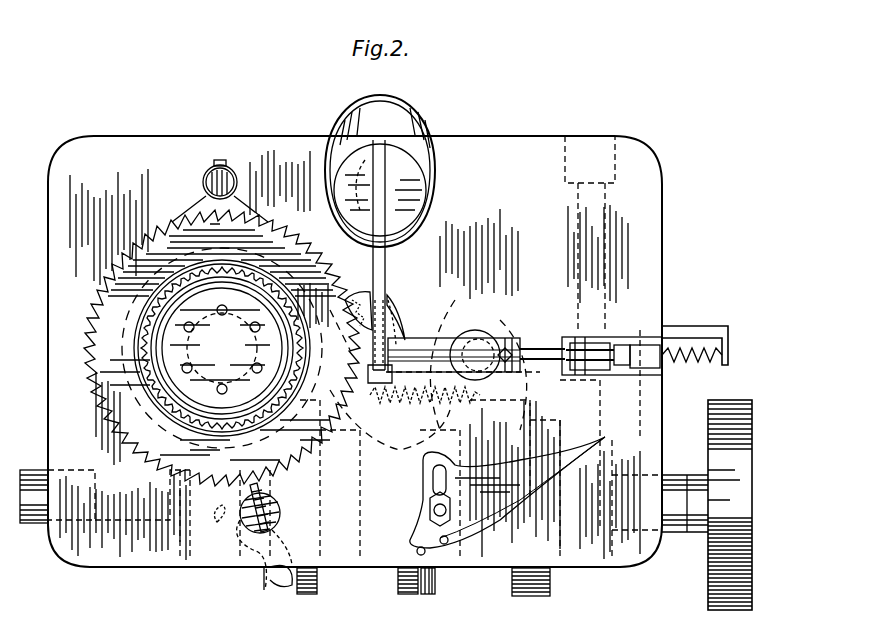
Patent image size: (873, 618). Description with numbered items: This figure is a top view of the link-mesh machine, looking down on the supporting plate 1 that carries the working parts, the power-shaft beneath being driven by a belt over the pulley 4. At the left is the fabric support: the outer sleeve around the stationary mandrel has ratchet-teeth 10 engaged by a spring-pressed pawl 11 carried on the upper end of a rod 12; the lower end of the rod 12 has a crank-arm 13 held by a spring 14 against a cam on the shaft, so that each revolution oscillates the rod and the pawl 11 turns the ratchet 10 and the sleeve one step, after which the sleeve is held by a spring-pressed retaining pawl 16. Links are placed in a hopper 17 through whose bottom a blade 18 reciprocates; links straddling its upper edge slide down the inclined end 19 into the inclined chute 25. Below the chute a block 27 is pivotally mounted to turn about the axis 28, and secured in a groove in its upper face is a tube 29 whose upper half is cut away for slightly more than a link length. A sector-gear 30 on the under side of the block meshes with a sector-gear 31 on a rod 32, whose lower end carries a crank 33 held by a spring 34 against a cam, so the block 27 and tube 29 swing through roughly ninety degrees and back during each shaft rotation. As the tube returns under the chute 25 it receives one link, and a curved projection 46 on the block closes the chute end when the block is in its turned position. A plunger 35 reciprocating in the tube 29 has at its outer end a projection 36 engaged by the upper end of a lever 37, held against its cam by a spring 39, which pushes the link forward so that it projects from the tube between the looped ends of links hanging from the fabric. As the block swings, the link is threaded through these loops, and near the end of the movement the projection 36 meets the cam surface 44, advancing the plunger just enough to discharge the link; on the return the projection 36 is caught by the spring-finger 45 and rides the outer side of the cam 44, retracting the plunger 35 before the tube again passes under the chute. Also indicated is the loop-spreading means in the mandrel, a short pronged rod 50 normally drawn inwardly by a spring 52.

The supporting plate 1 is at (652, 228).
The pulley 4 is at (737, 443).
The ratchet-teeth 10 is at (118, 430).
The pawl 11 is at (268, 480).
The rod 12 is at (250, 508).
The crank-arm 13 is at (285, 580).
The spring 14 is at (262, 578).
The retaining pawl 16 is at (212, 210).
The hopper 17 is at (432, 125).
The blade 18 is at (372, 148).
The inclined upper end 19 is at (383, 190).
The chute 25 is at (380, 265).
The block 27 is at (442, 338).
The axis 28 is at (222, 348).
The tube 29 is at (412, 345).
The sector-gear 30 is at (390, 380).
The sector-gear 31 is at (397, 298).
The rod 32 is at (502, 326).
The crank 33 is at (452, 440).
The spring 34 is at (425, 386).
The plunger 35 is at (540, 348).
The projection 36 is at (622, 348).
The lever 37 is at (700, 366).
The spring 39 is at (725, 360).
The cam surface 44 is at (446, 544).
The spring-finger 45 is at (439, 581).
The curved projection 46 is at (355, 292).
The short rod 50 is at (423, 593).
The spring 52 is at (415, 593).